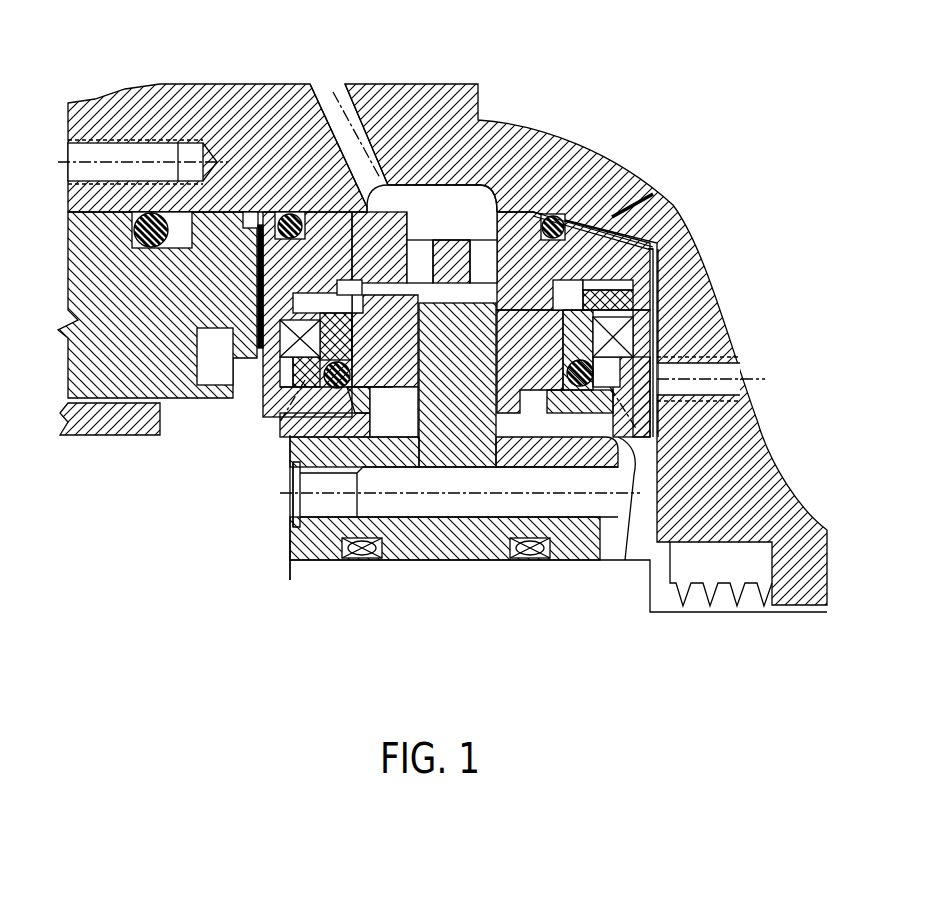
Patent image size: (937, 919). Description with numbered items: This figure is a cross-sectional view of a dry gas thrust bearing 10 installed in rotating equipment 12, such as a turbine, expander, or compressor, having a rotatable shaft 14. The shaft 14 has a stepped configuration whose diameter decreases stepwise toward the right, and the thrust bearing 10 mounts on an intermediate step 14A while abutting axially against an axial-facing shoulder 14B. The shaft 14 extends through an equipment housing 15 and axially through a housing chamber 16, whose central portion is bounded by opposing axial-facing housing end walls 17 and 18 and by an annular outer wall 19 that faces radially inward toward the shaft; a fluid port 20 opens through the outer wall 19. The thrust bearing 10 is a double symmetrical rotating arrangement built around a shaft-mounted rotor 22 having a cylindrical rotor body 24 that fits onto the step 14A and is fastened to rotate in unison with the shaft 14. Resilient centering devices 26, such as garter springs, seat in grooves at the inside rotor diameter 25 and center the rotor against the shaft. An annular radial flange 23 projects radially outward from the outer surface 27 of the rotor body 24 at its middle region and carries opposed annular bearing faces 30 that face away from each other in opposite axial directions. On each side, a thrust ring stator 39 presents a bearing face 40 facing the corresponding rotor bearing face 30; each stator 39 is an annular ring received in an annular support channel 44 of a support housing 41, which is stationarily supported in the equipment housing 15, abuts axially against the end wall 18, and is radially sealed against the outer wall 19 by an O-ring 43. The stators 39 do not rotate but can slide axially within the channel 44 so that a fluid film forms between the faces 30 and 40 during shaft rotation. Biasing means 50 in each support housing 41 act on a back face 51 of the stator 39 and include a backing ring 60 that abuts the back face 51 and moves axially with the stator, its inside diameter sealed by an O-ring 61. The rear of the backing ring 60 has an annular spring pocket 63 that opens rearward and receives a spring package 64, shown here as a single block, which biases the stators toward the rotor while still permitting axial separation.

The dry gas thrust bearing 10 is at (518, 205).
The rotating equipment 12 is at (190, 90).
The rotatable shaft 14 is at (627, 565).
The intermediate step 14A is at (474, 565).
The axial-facing shoulder 14B is at (288, 547).
The equipment housing 15 is at (613, 168).
The housing chamber 16 is at (217, 415).
The housing end wall 17 is at (252, 265).
The housing end wall 18 is at (661, 270).
The outer wall 19 is at (469, 178).
The fluid port 20 is at (358, 100).
The rotor 22 is at (410, 563).
The annular radial flange 23 is at (444, 292).
The rotor body 24 is at (548, 525).
The inside rotor diameter 25 is at (440, 520).
The resilient centering devices 26 is at (356, 557).
The outer surface 27 is at (620, 440).
The bearing faces 30 is at (427, 373).
The thrust ring stators 39 is at (325, 212).
The bearing faces 40 is at (347, 323).
The support housing 41 is at (617, 302).
The O-ring 43 is at (282, 212).
The annular support channel 44 is at (654, 248).
The biasing means 50 is at (662, 380).
The back face 51 is at (665, 363).
The backing ring 60 is at (641, 338).
The O-ring 61 is at (340, 540).
The spring pocket 63 is at (240, 358).
The spring package 64 is at (645, 360).